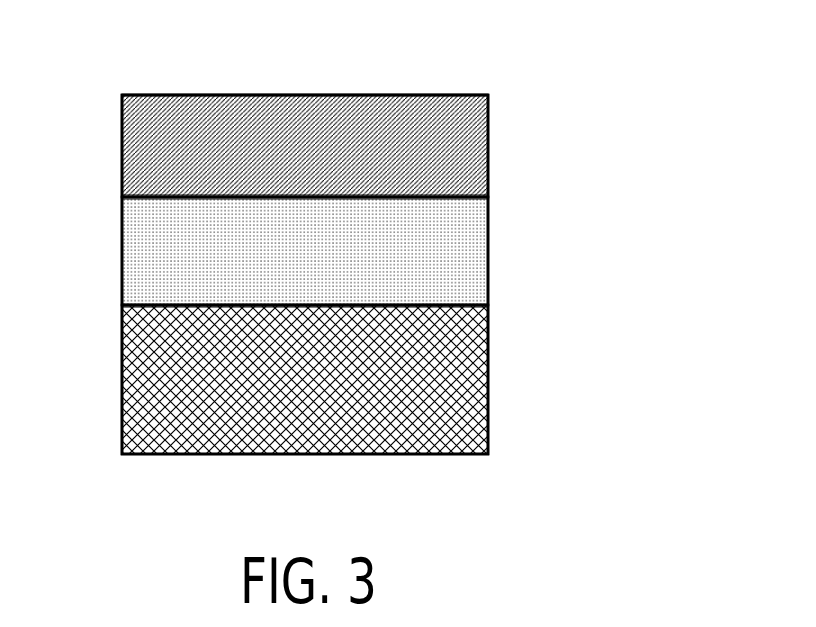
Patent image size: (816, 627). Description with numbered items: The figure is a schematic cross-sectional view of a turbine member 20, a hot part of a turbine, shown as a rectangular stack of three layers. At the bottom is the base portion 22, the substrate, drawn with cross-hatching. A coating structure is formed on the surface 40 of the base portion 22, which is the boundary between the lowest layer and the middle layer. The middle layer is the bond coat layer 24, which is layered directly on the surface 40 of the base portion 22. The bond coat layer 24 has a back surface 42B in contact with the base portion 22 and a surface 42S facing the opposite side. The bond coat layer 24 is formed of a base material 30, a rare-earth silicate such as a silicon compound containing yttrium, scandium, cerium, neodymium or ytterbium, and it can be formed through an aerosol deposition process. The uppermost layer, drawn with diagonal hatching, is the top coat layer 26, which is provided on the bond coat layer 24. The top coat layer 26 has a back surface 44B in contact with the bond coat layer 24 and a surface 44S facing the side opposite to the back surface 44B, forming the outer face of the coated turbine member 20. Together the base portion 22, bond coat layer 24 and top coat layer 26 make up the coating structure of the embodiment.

The turbine member 20 is at (469, 54).
The base portion 22 is at (479, 376).
The bond coat layer 24 is at (474, 212).
The top coat layer 26 is at (473, 145).
The base material 30 is at (475, 252).
The surface of the base portion 40 is at (469, 303).
The surface of the bond coat layer 42S is at (468, 192).
The back surface of the bond coat layer 42B is at (146, 308).
The surface of the top coat layer 44S is at (303, 95).
The back surface of the top coat layer 44B is at (145, 200).